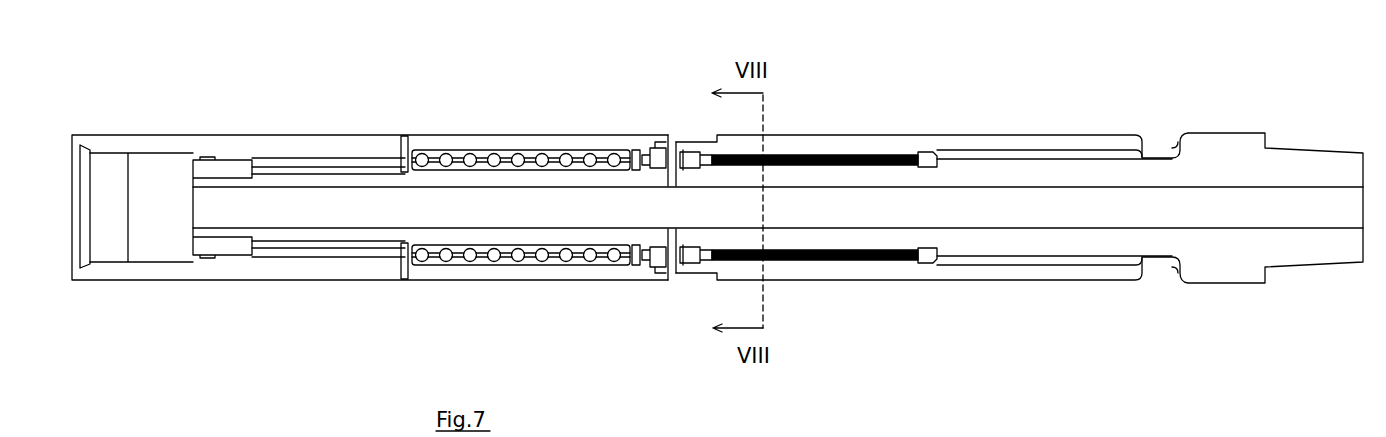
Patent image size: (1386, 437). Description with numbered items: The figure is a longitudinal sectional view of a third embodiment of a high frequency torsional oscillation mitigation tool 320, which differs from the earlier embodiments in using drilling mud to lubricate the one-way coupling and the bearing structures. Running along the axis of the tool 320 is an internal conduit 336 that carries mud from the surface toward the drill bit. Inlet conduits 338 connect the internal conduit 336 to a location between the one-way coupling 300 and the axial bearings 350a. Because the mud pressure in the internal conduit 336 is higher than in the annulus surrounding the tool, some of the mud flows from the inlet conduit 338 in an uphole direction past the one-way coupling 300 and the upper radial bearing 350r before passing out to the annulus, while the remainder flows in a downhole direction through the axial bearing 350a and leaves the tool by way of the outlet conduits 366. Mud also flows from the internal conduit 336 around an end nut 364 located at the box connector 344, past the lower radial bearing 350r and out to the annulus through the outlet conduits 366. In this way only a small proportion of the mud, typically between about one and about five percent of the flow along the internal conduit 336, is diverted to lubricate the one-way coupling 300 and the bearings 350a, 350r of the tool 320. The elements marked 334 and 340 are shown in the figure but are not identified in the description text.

The one-way coupling 300 is at (824, 283).
The high frequency torsional oscillation mitigation tool 320 is at (263, 352).
The upper seal element 334 is at (832, 172).
The internal conduit 336 is at (1190, 228).
The inlet conduit 338 is at (667, 158).
The lower seal element 340 is at (850, 270).
The box connector 344 is at (100, 265).
The axial bearing 350a is at (490, 136).
The radial bearing 350r is at (332, 156).
The end nut 364 is at (220, 168).
The outlet conduit 366 is at (404, 281).